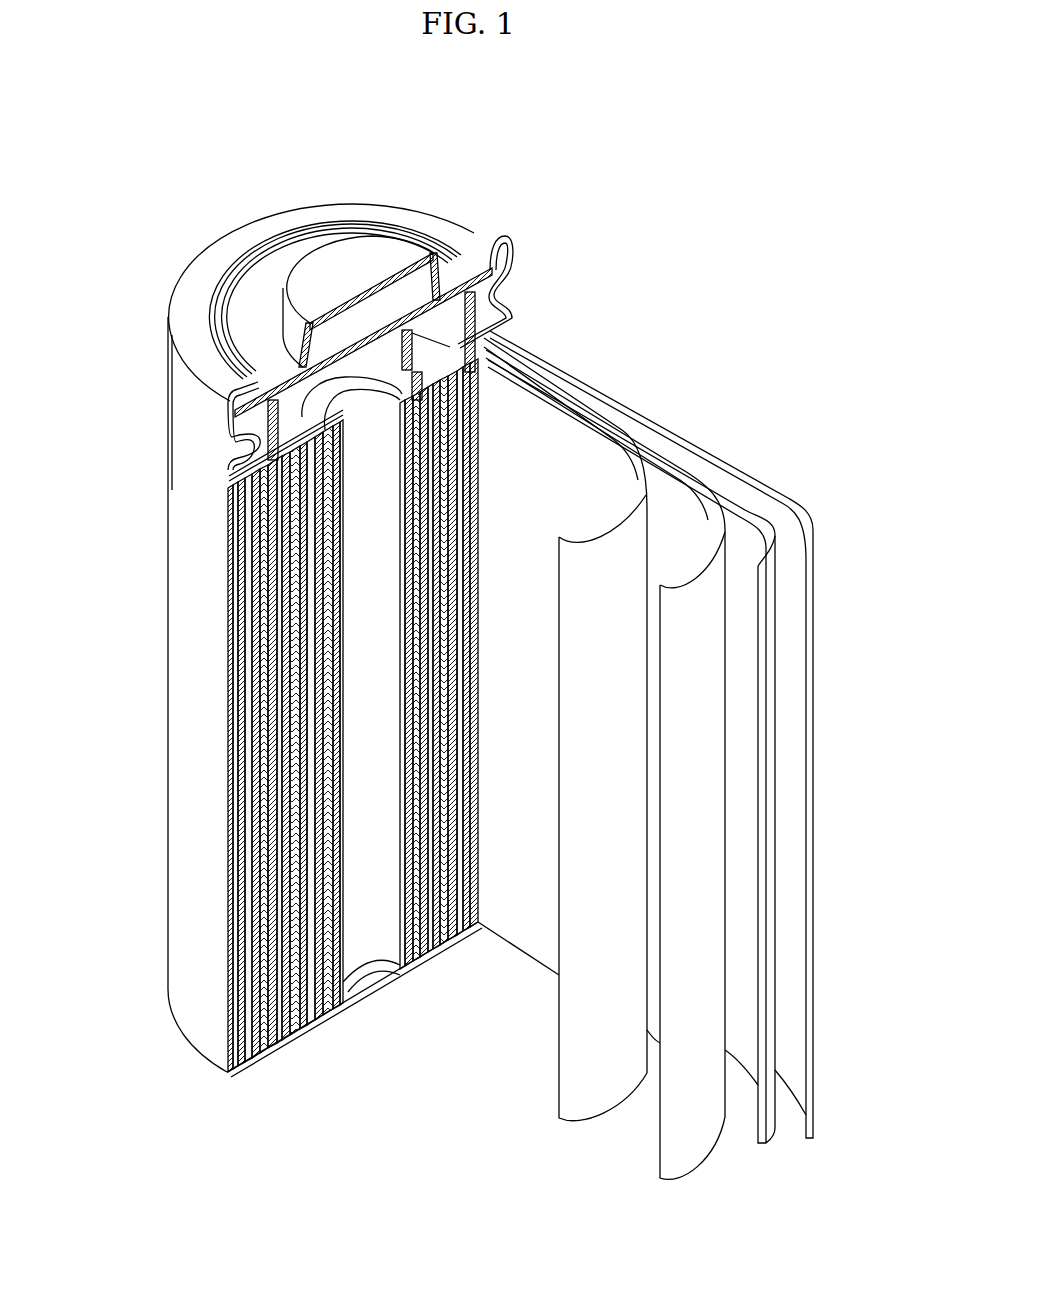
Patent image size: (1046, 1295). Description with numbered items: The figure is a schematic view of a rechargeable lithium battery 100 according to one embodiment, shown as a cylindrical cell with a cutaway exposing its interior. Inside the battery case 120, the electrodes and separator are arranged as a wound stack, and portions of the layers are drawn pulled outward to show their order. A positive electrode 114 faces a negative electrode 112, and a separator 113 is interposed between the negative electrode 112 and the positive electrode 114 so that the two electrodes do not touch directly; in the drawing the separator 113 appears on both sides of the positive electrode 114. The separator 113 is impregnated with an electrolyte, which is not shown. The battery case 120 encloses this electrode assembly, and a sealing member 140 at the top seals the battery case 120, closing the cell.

The rechargeable lithium battery 100 is at (580, 198).
The negative electrode 112 is at (777, 487).
The separator 113 is at (585, 407).
The positive electrode 114 is at (656, 455).
The battery case 120 is at (172, 583).
The sealing member 140 is at (343, 262).